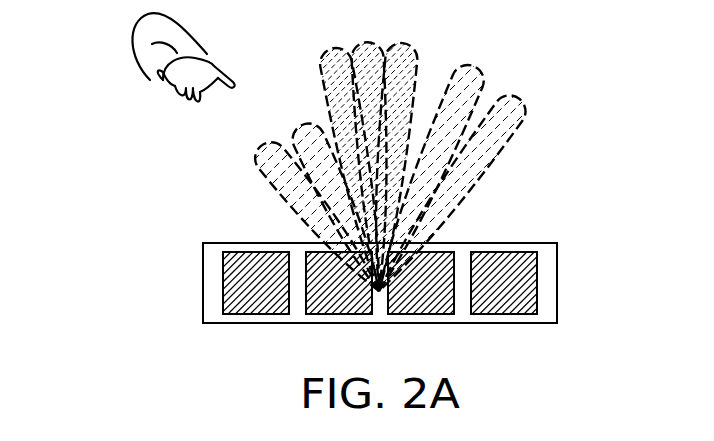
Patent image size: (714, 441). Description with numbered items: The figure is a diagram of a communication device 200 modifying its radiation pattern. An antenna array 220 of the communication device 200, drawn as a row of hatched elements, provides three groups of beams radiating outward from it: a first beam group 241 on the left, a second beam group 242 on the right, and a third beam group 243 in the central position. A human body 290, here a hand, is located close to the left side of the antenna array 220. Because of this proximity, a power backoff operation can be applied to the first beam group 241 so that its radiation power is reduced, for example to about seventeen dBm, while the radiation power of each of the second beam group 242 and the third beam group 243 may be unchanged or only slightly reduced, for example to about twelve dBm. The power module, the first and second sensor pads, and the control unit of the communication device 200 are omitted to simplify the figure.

The communication device 200 is at (337, 301).
The antenna array 220 is at (380, 323).
The first beam group 241 is at (258, 161).
The second beam group 242 is at (528, 105).
The third beam group 243 is at (369, 38).
The human body 290 is at (176, 33).